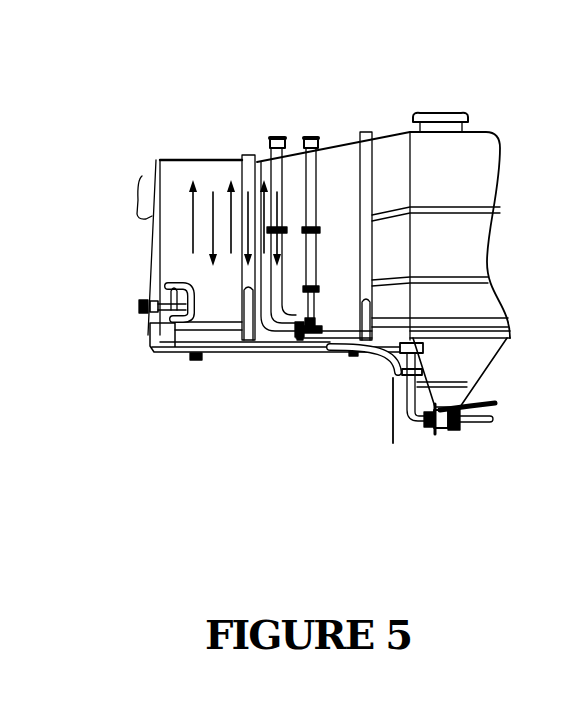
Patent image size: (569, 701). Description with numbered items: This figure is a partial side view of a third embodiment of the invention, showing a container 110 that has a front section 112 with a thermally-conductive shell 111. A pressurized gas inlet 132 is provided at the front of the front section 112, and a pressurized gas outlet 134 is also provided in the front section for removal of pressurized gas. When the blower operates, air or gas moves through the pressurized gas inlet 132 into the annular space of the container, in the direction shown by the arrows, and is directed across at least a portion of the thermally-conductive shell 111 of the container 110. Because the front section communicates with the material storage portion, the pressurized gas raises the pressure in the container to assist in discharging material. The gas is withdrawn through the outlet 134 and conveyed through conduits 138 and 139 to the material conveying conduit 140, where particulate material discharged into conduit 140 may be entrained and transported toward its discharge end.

The container 110 is at (484, 112).
The thermally-conductive shell 111 is at (200, 167).
The front section 112 is at (355, 108).
The pressurized gas inlet 132 is at (191, 283).
The pressurized gas outlet 134 is at (282, 122).
The conduit 138 is at (276, 283).
The conduit 139 is at (410, 397).
The material conveying conduit 140 is at (477, 422).